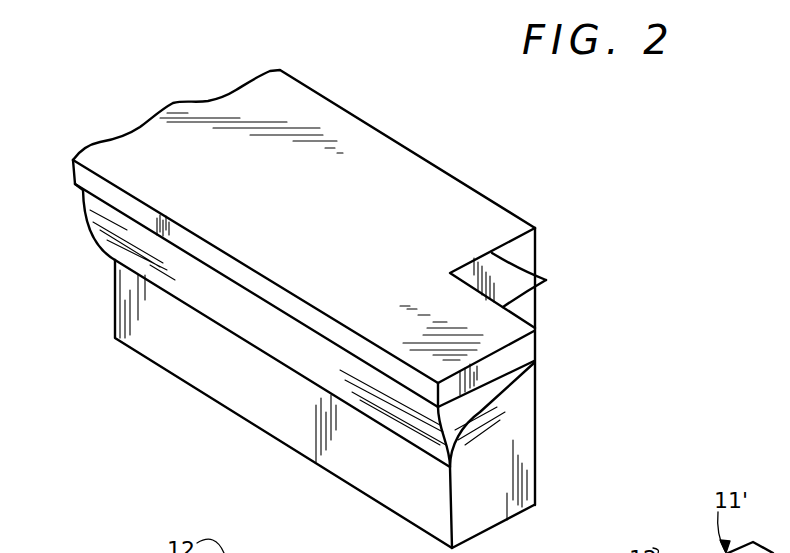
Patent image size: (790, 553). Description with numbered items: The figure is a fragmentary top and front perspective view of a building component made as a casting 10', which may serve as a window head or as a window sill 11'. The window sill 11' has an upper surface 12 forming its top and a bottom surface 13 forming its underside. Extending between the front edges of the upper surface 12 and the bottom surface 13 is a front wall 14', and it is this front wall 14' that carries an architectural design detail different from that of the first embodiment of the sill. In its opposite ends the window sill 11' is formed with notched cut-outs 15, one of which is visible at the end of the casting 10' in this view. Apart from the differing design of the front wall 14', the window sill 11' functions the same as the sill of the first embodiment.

The casting 10' is at (166, 442).
The window sill 11' is at (527, 322).
The upper surface 12 is at (370, 143).
The bottom surface 13 is at (512, 520).
The front wall 14' is at (304, 353).
The notched cut-outs 15 is at (546, 280).